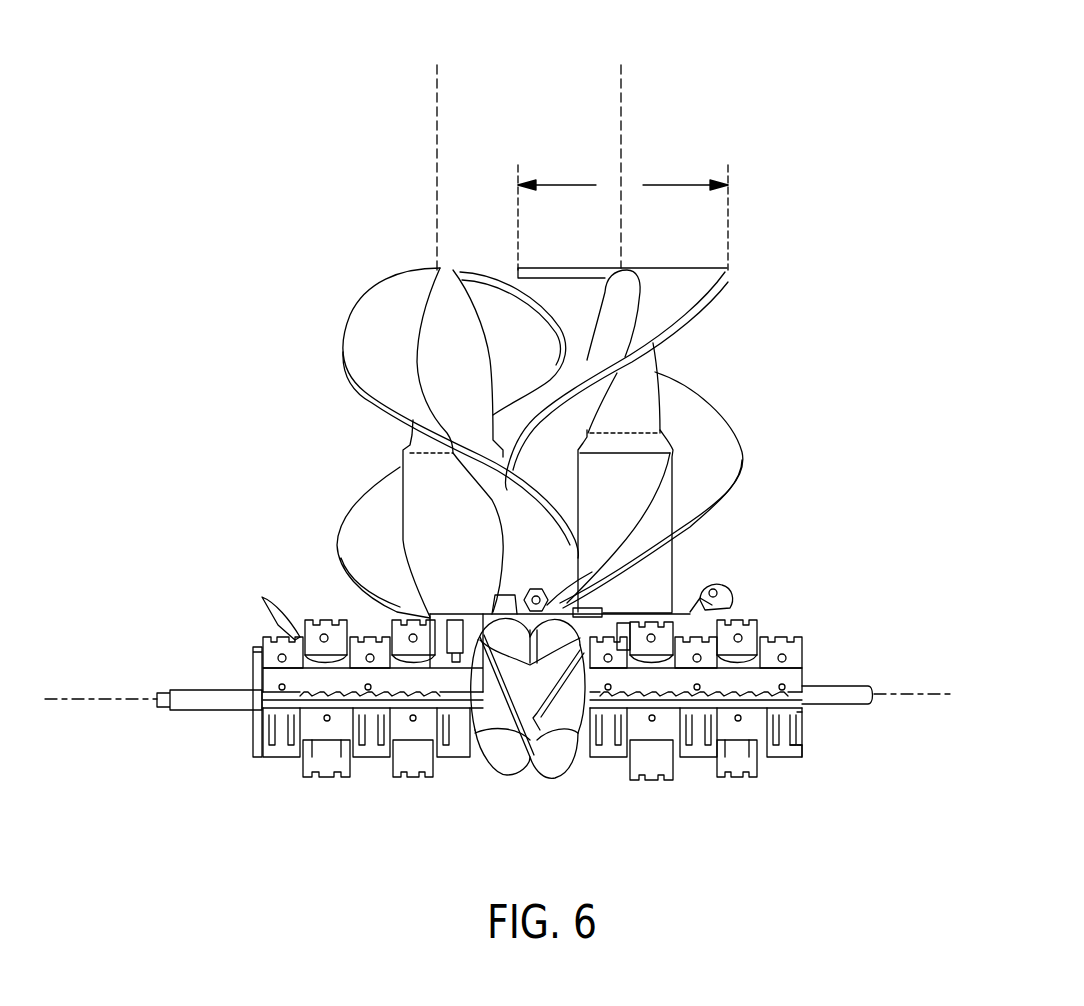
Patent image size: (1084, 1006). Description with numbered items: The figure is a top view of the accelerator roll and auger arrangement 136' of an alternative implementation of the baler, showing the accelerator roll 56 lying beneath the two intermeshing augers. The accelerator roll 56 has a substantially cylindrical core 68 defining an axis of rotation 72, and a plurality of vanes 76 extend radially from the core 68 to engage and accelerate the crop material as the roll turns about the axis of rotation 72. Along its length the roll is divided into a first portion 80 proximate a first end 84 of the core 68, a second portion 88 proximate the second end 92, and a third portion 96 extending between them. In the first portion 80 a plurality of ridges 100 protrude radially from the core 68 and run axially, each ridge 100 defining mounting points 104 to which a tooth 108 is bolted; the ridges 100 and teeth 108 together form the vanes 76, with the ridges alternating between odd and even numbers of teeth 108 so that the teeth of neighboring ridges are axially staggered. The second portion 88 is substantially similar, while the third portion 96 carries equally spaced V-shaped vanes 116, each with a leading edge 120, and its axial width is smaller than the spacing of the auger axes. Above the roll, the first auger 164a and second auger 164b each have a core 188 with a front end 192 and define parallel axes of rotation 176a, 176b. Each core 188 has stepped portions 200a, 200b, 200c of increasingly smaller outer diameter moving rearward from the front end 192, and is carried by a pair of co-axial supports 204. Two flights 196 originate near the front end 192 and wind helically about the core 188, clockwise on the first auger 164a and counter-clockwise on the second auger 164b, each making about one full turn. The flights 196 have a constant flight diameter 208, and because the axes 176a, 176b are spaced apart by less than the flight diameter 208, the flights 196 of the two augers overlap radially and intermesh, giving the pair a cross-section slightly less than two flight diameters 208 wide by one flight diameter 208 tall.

The accelerator roll 56 is at (800, 618).
The cylindrical core 68 is at (802, 675).
The axis of rotation 72 is at (918, 700).
The vanes 76 is at (801, 745).
The first portion 80 is at (372, 760).
The first end 84 is at (253, 714).
The second portion 88 is at (713, 763).
The second end 92 is at (804, 711).
The third portion 96 is at (567, 755).
The ridges 100 is at (300, 762).
The mounting points 104 is at (310, 765).
The tooth 108 is at (758, 580).
The V-shaped vanes 116 is at (493, 762).
The leading edge 120 is at (528, 765).
The auger assembly 136' is at (685, 441).
The first auger 164a is at (652, 369).
The second auger 164b is at (427, 365).
The first axis of rotation 176a is at (628, 108).
The second axis of rotation 176b is at (446, 103).
The core 188 is at (423, 498).
The front end 192 is at (440, 612).
The flights 196 is at (358, 333).
The stepped portion 200a is at (657, 547).
The stepped portion 200b is at (633, 410).
The stepped portion 200c is at (623, 307).
The co-axial supports 204 is at (453, 663).
The flight diameter 208 is at (623, 217).